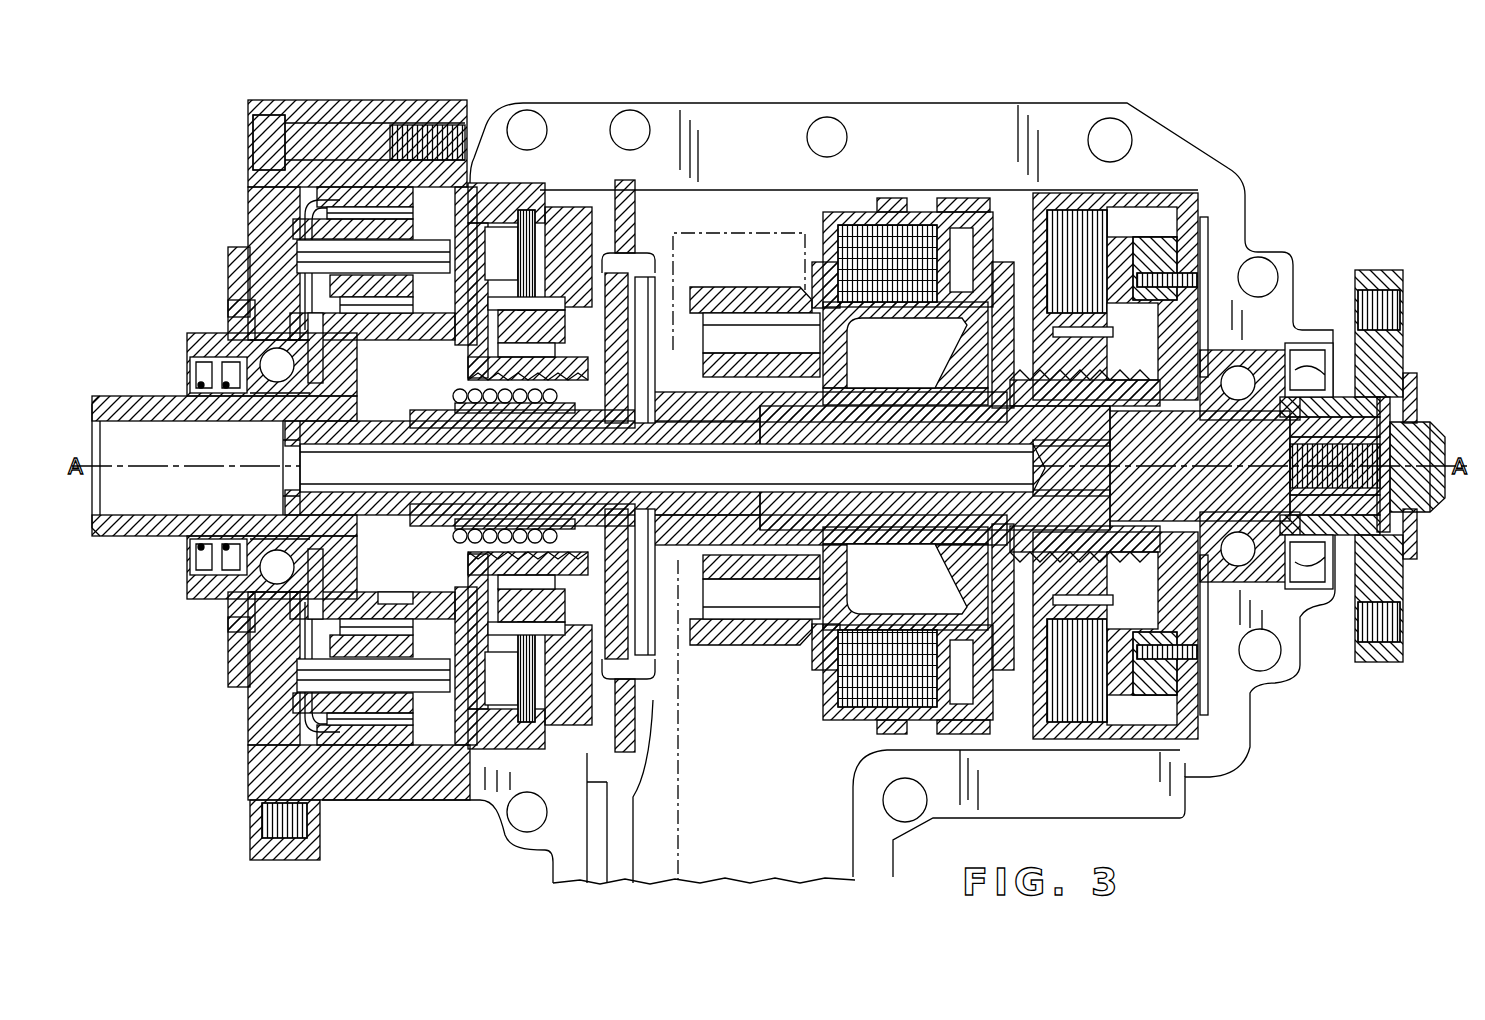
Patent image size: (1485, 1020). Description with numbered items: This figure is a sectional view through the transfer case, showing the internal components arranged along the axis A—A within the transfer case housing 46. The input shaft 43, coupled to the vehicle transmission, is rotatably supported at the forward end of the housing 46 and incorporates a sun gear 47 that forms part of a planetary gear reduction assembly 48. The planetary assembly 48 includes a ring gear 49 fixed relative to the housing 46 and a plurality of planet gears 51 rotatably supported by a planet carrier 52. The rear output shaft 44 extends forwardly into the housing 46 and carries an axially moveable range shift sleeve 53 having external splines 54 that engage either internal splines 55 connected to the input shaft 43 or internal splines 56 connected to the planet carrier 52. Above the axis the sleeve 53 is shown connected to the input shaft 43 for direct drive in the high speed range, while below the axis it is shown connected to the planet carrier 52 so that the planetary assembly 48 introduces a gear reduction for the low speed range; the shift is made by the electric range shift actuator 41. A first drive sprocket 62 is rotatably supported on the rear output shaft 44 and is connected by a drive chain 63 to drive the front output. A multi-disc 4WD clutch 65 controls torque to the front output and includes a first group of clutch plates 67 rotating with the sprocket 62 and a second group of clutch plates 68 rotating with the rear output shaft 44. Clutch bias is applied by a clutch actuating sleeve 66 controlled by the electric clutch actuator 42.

The electric range shift actuator 41 is at (580, 212).
The electric clutch actuator 42 is at (1143, 215).
The input shaft 43 is at (148, 398).
The rear output shaft 44 is at (1262, 384).
The transfer case housing 46 is at (565, 104).
The sun gear 47 is at (305, 312).
The planetary gear reduction assembly 48 is at (280, 245).
The ring gear 49 is at (360, 185).
The planet gears 51 is at (353, 745).
The planet carrier 52 is at (432, 665).
The range shift sleeve 53 is at (415, 410).
The external splines 54 is at (390, 420).
The internal splines 55 is at (412, 592).
The internal splines 56 is at (445, 315).
The first drive sprocket 62 is at (752, 292).
The drive chain 63 is at (720, 233).
The multi-disc 4WD clutch 65 is at (930, 210).
The clutch actuating sleeve 66 is at (1020, 388).
The first group of clutch plates 67 is at (866, 226).
The second group of clutch plates 68 is at (903, 320).